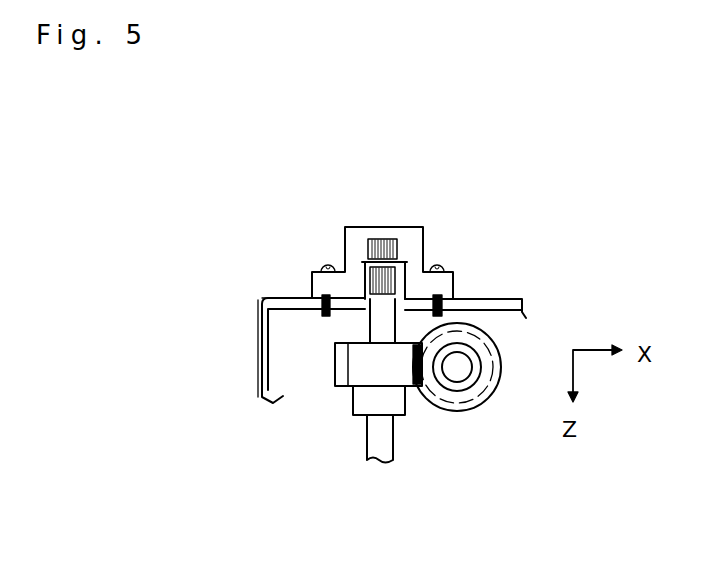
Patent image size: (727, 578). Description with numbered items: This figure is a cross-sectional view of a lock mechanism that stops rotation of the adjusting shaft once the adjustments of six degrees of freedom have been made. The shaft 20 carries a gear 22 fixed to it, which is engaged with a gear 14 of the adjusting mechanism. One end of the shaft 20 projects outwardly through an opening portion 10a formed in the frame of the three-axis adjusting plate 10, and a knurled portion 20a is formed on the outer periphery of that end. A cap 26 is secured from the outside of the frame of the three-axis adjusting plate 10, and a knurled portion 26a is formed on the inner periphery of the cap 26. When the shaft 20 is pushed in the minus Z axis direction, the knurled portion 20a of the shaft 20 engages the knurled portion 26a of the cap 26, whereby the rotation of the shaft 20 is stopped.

The three-axis adjusting plate 10 is at (508, 303).
The opening portion 10a is at (363, 305).
The gear 14 is at (500, 350).
The shaft 20 is at (392, 443).
The knurled portion 20a is at (405, 270).
The gear 22 is at (353, 398).
The cap 26 is at (415, 228).
The knurled portion 26a is at (377, 237).